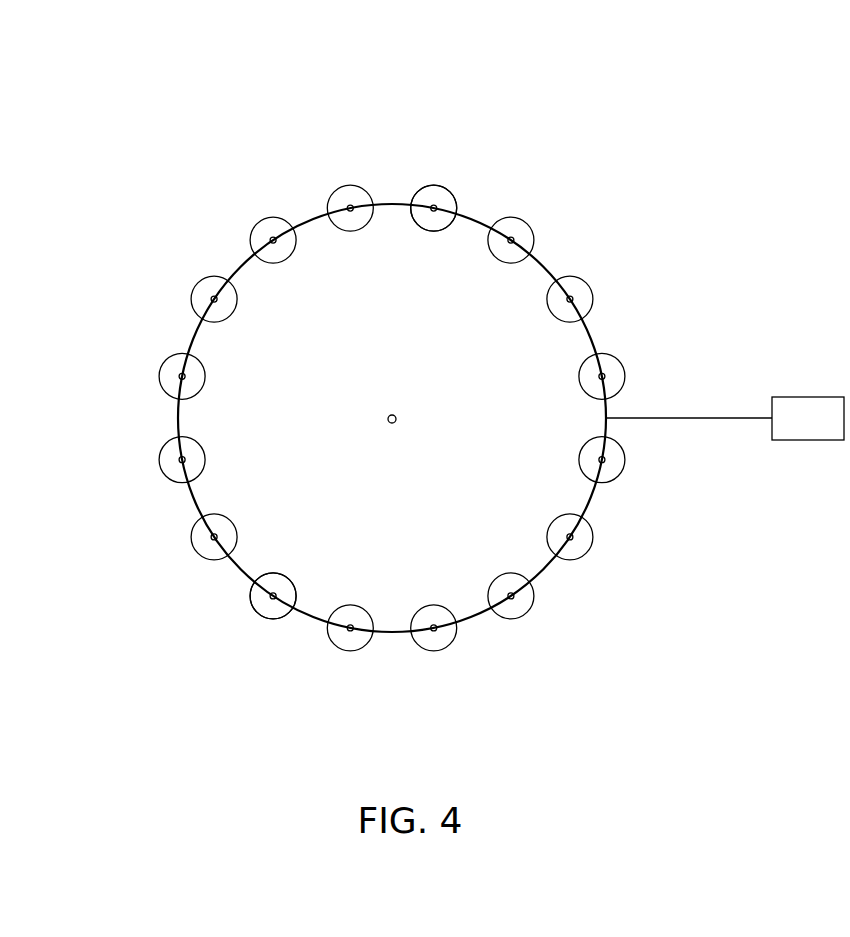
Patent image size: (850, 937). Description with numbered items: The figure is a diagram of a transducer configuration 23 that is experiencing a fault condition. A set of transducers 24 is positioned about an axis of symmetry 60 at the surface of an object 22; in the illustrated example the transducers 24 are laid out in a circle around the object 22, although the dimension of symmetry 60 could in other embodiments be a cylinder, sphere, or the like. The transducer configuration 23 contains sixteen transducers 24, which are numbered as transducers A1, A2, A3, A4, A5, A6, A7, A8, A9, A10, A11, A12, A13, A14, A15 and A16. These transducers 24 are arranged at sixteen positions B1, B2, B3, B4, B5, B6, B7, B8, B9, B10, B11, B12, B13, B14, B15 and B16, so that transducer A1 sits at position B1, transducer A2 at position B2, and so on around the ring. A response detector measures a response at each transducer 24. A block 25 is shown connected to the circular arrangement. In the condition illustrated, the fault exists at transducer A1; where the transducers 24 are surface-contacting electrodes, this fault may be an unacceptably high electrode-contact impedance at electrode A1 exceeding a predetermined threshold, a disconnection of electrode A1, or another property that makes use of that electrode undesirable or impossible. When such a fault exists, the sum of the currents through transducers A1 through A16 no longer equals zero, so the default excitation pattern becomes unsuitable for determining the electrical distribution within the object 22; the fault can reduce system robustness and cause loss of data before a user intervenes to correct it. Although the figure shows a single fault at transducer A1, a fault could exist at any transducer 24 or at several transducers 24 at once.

The object 22 is at (465, 499).
The transducer configuration 23 is at (666, 90).
The transducers 24 is at (434, 208).
The controller 25 is at (794, 430).
The axis of symmetry 60 is at (396, 416).
The transducer A1 is at (452, 195).
The transducer A2 is at (533, 235).
The transducer A3 is at (593, 296).
The transducer A4 is at (625, 378).
The transducer A5 is at (602, 460).
The transducer A6 is at (577, 559).
The transducer A7 is at (508, 619).
The transducer A8 is at (421, 647).
The transducer A9 is at (350, 628).
The transducer A10 is at (251, 601).
The transducer A11 is at (214, 537).
The transducer A12 is at (161, 450).
The transducer A13 is at (159, 375).
The transducer A14 is at (191, 295).
The transducer A15 is at (252, 230).
The transducer A16 is at (350, 185).
The position B1 is at (434, 208).
The position B2 is at (511, 240).
The position B3 is at (570, 299).
The position B4 is at (602, 376).
The position B5 is at (602, 460).
The position B6 is at (588, 550).
The position B7 is at (524, 615).
The position B8 is at (437, 651).
The position B9 is at (346, 651).
The position B10 is at (261, 615).
The position B11 is at (195, 549).
The position B12 is at (182, 460).
The position B13 is at (182, 376).
The position B14 is at (214, 299).
The position B15 is at (273, 240).
The position B16 is at (350, 208).